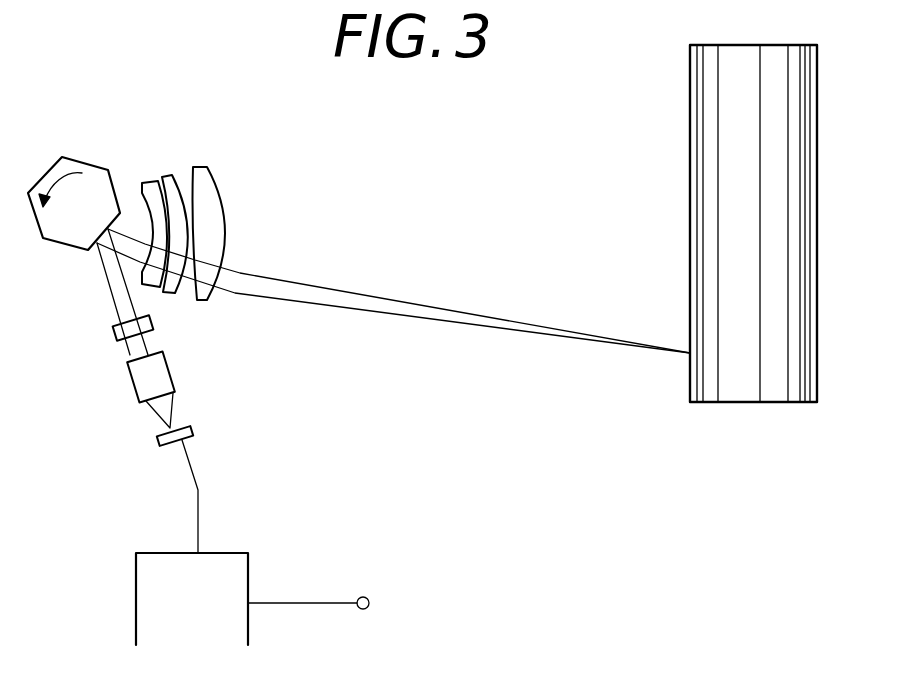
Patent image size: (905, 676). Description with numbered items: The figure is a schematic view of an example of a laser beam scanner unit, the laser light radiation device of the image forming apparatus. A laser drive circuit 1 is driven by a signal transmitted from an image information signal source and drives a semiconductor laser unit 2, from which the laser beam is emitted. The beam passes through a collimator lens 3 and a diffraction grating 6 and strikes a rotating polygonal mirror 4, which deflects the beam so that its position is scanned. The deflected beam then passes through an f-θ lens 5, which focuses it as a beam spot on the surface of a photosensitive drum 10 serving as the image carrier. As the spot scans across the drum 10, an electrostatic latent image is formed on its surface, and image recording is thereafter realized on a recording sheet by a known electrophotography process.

The laser drive circuit 1 is at (233, 552).
The semiconductor laser unit 2 is at (193, 428).
The collimator lens 3 is at (173, 378).
The polygonal mirror 4 is at (50, 248).
The f-θ lens 5 is at (181, 167).
The diffraction grating 6 is at (113, 336).
The photosensitive drum 10 is at (690, 115).